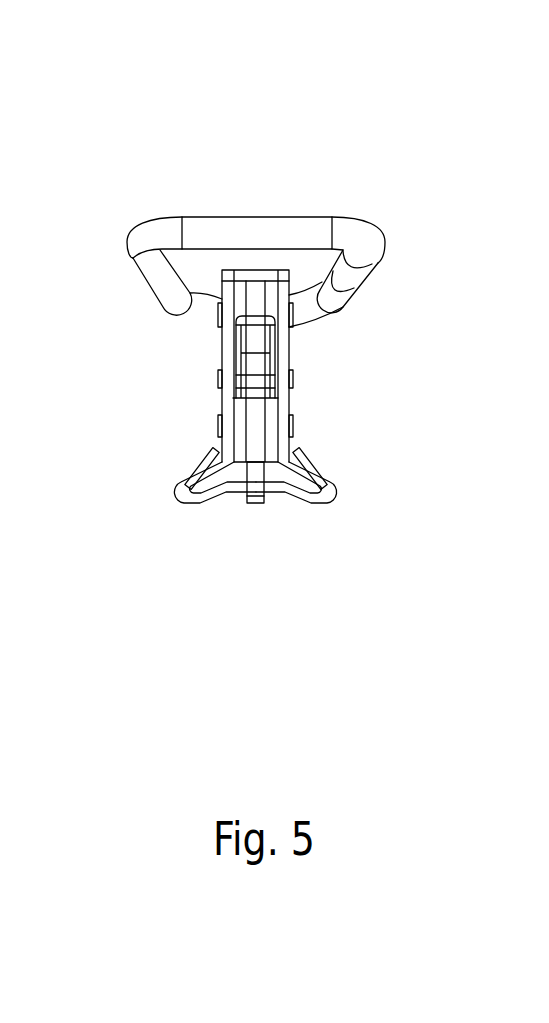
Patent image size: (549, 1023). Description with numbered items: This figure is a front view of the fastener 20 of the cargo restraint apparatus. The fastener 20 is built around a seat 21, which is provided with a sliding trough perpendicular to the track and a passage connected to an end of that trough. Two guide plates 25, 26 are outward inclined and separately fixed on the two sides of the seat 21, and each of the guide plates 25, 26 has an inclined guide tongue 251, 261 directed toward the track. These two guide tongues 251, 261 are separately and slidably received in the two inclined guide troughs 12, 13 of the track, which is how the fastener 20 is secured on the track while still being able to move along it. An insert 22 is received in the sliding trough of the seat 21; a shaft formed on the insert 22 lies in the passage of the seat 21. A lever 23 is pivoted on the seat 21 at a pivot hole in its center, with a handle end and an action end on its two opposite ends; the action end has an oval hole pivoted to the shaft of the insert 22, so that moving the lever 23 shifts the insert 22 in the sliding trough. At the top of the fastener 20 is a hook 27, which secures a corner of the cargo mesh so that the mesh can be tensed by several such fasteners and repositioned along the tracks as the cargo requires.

The fastener 20 is at (210, 346).
The seat 21 is at (258, 273).
The insert 22 is at (251, 503).
The lever 23 is at (268, 343).
The guide plate 25 is at (227, 400).
The guide plate 26 is at (285, 403).
The hook 27 is at (202, 232).
The inclined guide trough 12 is at (193, 472).
The inclined guide trough 13 is at (319, 472).
The guide tongue 251 is at (205, 476).
The guide tongue 261 is at (307, 476).